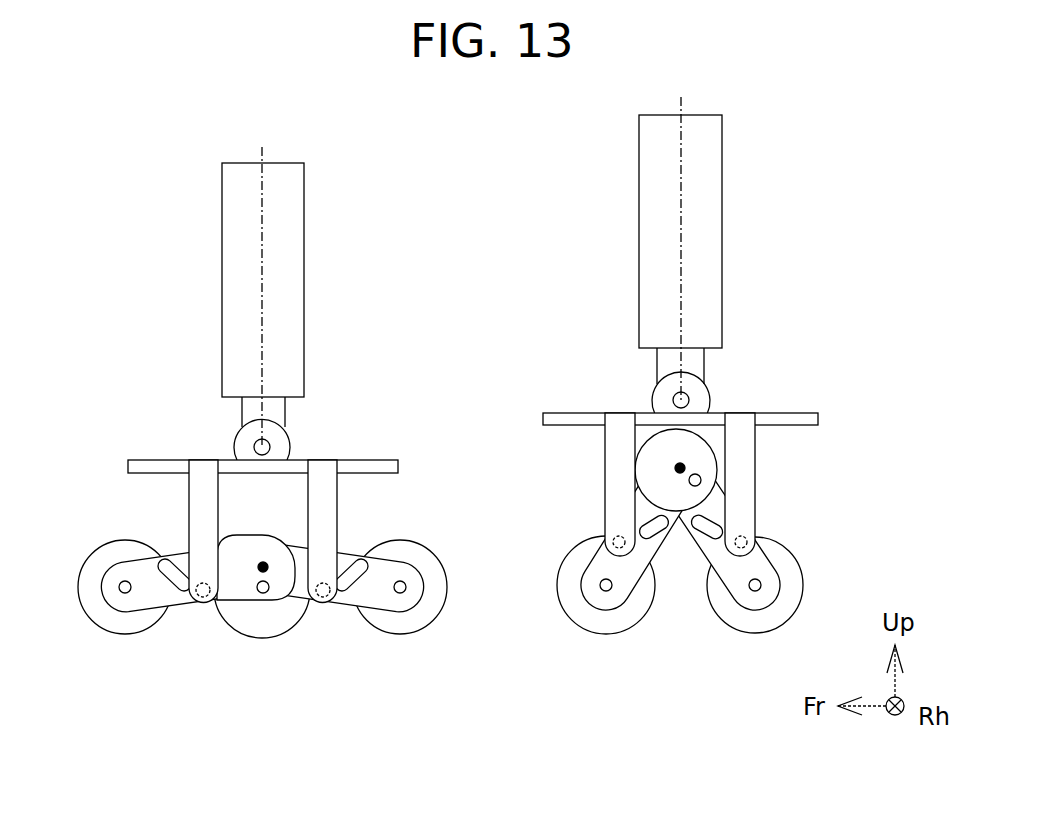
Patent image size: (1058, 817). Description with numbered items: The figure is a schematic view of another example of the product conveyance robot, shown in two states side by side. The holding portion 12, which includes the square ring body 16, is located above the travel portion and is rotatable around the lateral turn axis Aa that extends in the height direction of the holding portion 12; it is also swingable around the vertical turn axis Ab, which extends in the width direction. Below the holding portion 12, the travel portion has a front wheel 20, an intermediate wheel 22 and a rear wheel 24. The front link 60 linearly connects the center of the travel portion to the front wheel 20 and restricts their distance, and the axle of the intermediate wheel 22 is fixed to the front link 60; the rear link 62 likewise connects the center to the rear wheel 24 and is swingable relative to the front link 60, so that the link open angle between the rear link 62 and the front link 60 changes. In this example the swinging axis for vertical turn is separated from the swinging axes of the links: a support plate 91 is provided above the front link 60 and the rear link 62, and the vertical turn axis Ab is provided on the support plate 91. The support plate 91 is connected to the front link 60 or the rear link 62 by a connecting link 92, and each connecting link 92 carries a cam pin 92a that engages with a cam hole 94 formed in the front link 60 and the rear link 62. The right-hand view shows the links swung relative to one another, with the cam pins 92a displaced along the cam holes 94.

The holding portion 12 is at (526, 271).
The ring body 16 is at (304, 290).
The front wheel 20 is at (102, 543).
The intermediate wheel 22 is at (267, 638).
The rear wheel 24 is at (423, 545).
The front link 60 is at (123, 617).
The rear link 62 is at (390, 617).
The support plate 91 is at (138, 460).
The connecting link 92 is at (188, 497).
The cam pin 92a is at (208, 600).
The cam hole 94 is at (170, 588).
The lateral turn axis Aa is at (471, 258).
The vertical turn axis Ab is at (270, 447).